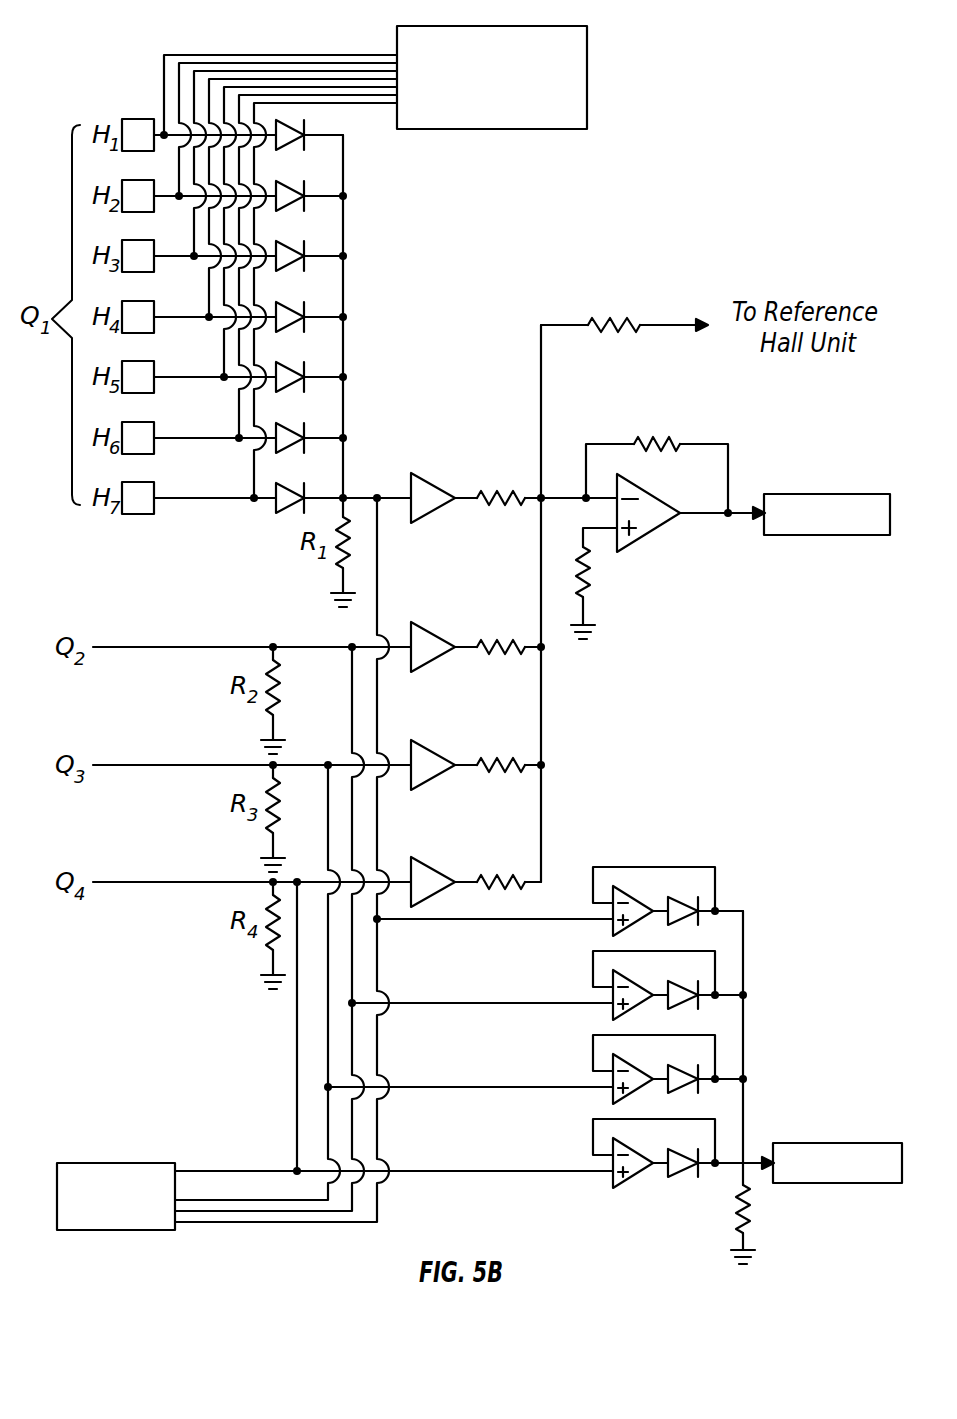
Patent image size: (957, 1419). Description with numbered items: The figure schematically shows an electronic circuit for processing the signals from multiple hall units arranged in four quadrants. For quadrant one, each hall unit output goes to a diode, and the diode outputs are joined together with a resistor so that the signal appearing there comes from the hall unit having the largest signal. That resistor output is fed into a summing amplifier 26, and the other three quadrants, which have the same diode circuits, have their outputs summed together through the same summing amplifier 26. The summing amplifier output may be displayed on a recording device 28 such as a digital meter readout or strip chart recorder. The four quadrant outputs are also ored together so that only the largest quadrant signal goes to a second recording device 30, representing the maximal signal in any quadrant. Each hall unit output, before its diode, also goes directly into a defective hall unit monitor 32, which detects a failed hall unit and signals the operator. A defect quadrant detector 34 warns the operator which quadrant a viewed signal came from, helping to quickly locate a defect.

The summing amplifier 26 is at (587, 432).
The recording device 28 is at (828, 494).
The recording device 30 is at (835, 1143).
The defective hall unit monitor 32 is at (492, 26).
The defect quadrant detector 34 is at (117, 1162).